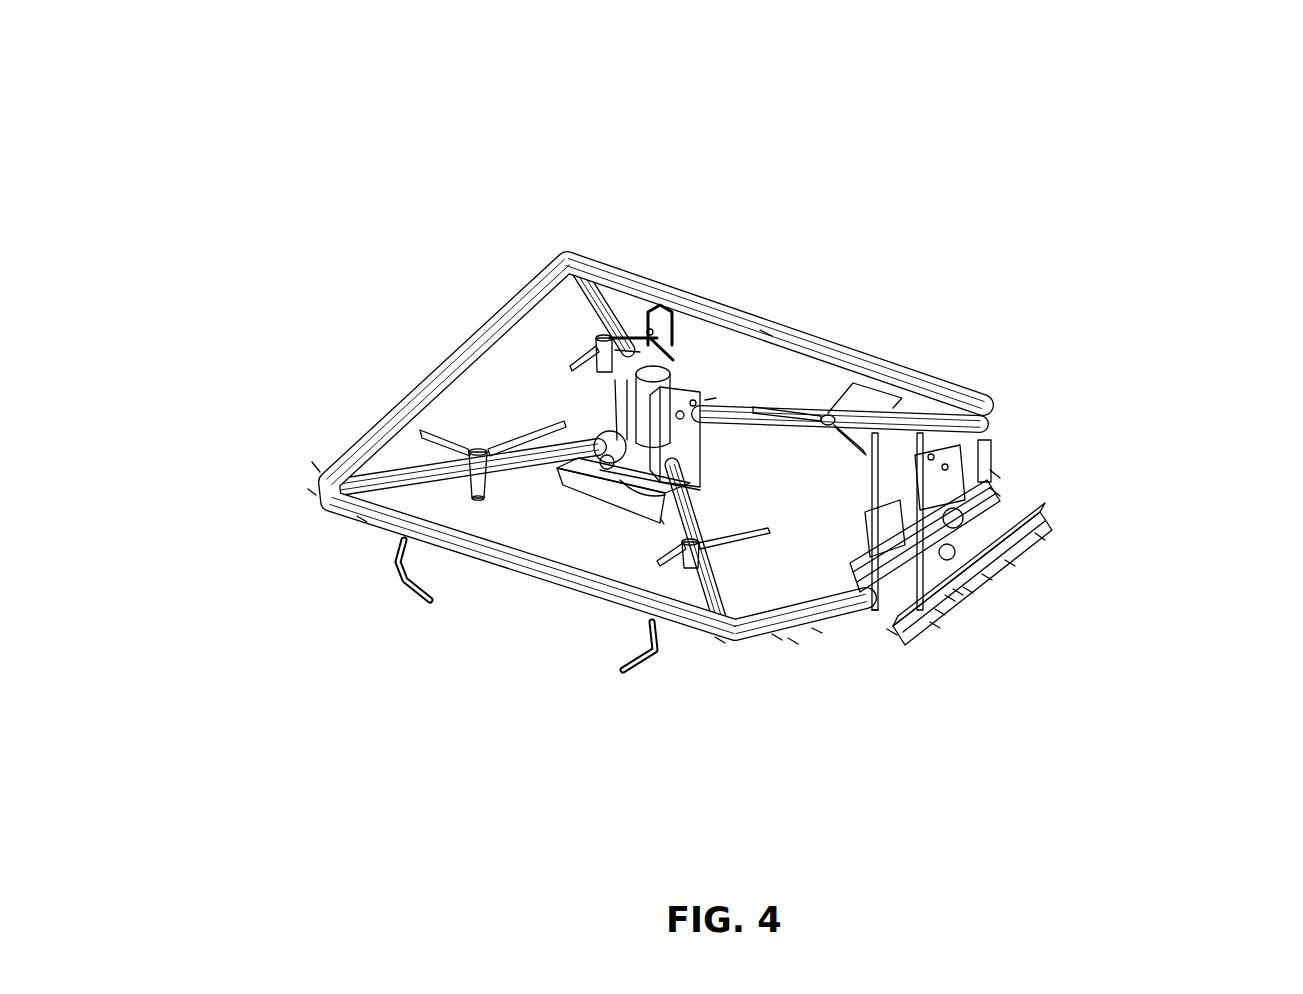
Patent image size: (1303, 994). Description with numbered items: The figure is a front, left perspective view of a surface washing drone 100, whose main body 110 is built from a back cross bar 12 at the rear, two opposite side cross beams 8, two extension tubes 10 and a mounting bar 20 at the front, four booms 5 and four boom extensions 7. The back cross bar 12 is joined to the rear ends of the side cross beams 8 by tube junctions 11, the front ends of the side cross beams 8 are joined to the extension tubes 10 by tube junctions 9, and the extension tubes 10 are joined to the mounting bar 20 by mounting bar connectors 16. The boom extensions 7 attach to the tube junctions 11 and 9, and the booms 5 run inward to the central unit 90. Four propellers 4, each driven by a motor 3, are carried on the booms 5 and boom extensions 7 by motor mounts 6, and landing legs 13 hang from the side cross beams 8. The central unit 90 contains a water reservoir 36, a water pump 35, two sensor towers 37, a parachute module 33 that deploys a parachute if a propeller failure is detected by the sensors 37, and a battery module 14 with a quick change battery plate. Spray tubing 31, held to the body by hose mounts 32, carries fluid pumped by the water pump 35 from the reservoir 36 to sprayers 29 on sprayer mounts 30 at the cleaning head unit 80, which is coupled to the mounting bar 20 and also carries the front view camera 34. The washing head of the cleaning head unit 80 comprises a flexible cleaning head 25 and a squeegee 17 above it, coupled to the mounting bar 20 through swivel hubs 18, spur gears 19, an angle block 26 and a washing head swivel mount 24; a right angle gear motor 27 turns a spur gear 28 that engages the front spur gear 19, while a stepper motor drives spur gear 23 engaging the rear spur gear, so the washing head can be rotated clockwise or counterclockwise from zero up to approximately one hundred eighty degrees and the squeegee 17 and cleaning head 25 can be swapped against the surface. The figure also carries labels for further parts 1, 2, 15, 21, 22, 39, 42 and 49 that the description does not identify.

The surface washing drone 100 is at (255, 78).
The main body 110 is at (487, 316).
The central unit 90 is at (682, 350).
The cleaning head unit 80 is at (1005, 497).
The front arm 1 is at (600, 450).
The central housing 2 is at (712, 398).
The motor 3 is at (690, 565).
The propeller 4 is at (607, 318).
The boom 5 is at (316, 466).
The motor mount 6 is at (605, 332).
The boom extension 7 is at (362, 519).
The side cross beam 8 is at (765, 333).
The tube junction 9 is at (720, 640).
The extension tube 10 is at (793, 641).
The tube junction 11 is at (312, 492).
The back cross bar 12 is at (590, 409).
The landing leg 13 is at (410, 596).
The battery module 14 is at (662, 520).
The camera 15 is at (703, 398).
The mounting bar connector 16 is at (995, 492).
The squeegee 17 is at (987, 577).
The swivel hub 18 is at (950, 598).
The spur gear 19 is at (935, 625).
The mounting bar 20 is at (875, 610).
The bracket 21 is at (940, 612).
The pivot wheel 22 is at (1012, 512).
The spur gear 23 is at (997, 474).
The washing head swivel mount 24 is at (958, 592).
The cleaning head 25 is at (1040, 536).
The angle block 26 is at (1010, 563).
The right angle gear motor 27 is at (968, 590).
The spur gear 28 is at (968, 506).
The sprayer 29 is at (985, 412).
The sprayer mount 30 is at (892, 632).
The spray tubing 31 is at (777, 637).
The hose mount 32 is at (817, 630).
The parachute module 33 is at (662, 302).
The front view camera 34 is at (945, 465).
The water pump 35 is at (618, 440).
The water reservoir 36 is at (607, 490).
The sensor tower 37 is at (622, 345).
The drive motor 39 is at (920, 480).
The propeller hub 42 is at (880, 490).
The fastener 49 is at (650, 330).